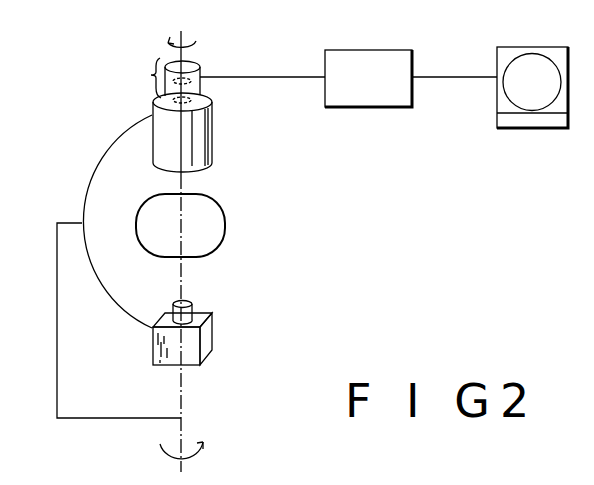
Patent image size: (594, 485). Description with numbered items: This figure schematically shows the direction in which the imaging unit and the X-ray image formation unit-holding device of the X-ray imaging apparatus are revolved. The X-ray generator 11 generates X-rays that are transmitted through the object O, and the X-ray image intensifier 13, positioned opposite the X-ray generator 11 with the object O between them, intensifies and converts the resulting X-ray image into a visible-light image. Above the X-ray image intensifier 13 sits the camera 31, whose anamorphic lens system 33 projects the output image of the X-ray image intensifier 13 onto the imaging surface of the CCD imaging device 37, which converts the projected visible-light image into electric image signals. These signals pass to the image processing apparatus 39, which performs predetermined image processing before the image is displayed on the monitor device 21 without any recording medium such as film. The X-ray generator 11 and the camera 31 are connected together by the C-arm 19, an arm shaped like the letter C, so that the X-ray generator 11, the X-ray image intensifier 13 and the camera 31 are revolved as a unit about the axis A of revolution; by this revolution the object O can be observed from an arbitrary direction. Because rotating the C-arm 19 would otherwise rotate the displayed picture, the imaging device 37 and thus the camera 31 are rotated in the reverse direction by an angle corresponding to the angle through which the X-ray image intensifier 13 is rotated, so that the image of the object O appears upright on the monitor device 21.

The X-ray generator 11 is at (197, 352).
The X-ray image intensifier 13 is at (200, 146).
The C-arm 19 is at (93, 172).
The monitor device 21 is at (558, 105).
The camera 31 is at (151, 75).
The anamorphic lens system 33 is at (213, 117).
The CCD imaging device 37 is at (203, 84).
The image processing apparatus 39 is at (362, 99).
The object O is at (208, 220).
The axis of revolution A is at (183, 262).